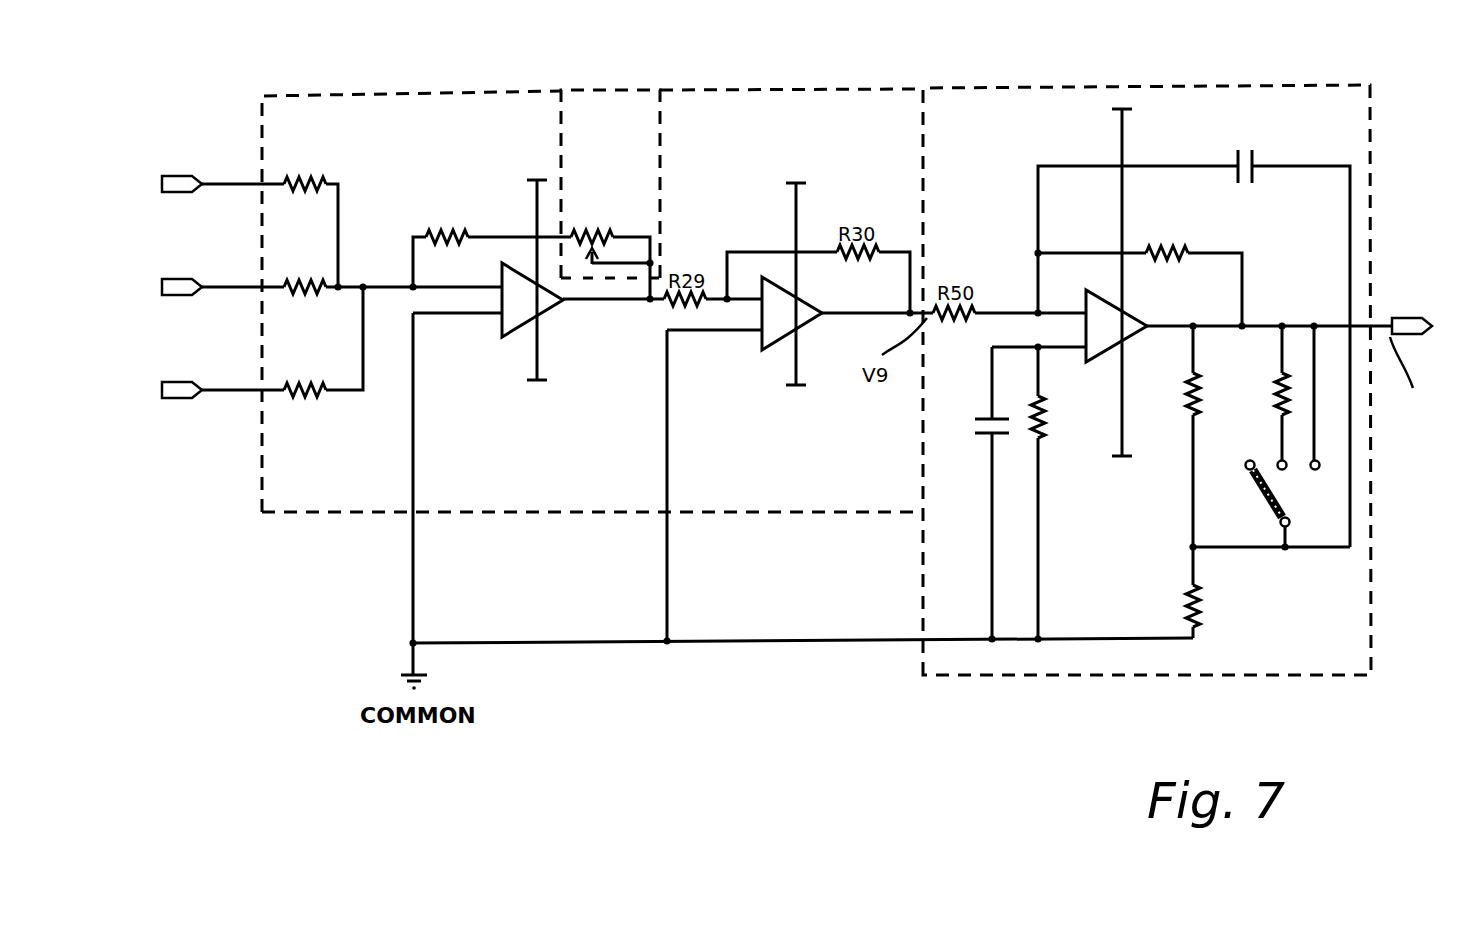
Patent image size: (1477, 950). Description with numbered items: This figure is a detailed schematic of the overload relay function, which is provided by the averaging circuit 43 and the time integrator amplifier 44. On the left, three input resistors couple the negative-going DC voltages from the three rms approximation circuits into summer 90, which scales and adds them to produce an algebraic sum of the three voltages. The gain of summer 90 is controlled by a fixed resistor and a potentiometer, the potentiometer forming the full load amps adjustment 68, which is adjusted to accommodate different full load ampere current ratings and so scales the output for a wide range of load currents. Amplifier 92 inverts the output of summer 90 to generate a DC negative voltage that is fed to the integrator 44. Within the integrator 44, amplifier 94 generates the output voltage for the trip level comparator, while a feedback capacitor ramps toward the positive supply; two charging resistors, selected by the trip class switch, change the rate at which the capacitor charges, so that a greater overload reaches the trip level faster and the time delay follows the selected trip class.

The averaging circuit 43 is at (462, 97).
The full load amps adjustment 68 is at (590, 100).
The time integrator circuit 44 is at (983, 103).
The summer 90 is at (503, 330).
The amplifier 92 is at (762, 338).
The amplifier 94 is at (1123, 318).